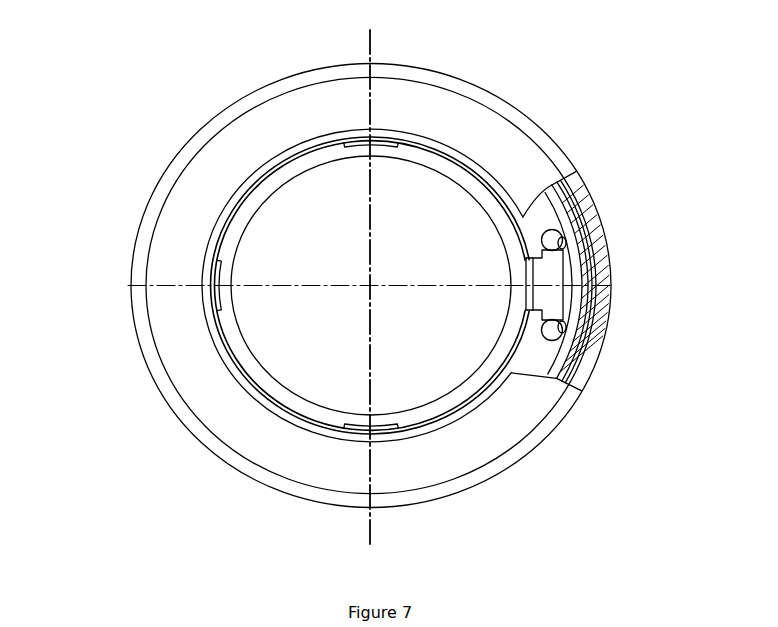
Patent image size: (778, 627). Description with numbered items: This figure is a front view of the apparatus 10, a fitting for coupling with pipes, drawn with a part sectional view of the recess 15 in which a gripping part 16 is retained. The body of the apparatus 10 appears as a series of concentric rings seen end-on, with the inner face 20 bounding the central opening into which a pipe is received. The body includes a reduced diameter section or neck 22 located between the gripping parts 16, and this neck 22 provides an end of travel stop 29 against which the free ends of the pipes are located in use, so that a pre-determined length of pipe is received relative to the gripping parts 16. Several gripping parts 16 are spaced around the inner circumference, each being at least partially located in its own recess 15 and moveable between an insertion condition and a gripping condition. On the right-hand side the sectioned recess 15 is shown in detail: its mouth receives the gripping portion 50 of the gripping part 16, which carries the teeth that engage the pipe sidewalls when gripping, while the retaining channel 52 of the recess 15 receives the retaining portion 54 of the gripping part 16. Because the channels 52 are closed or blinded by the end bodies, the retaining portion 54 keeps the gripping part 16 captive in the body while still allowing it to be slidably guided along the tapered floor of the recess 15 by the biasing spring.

The apparatus 10 is at (238, 100).
The recess 15 is at (558, 302).
The gripping part 16 is at (405, 130).
The inner face 20 is at (228, 374).
The neck 22 is at (293, 392).
The end of travel stop 29 is at (302, 397).
The gripping portion 50 is at (527, 256).
The retaining channel 52 is at (578, 173).
The retaining portion 54 is at (590, 350).